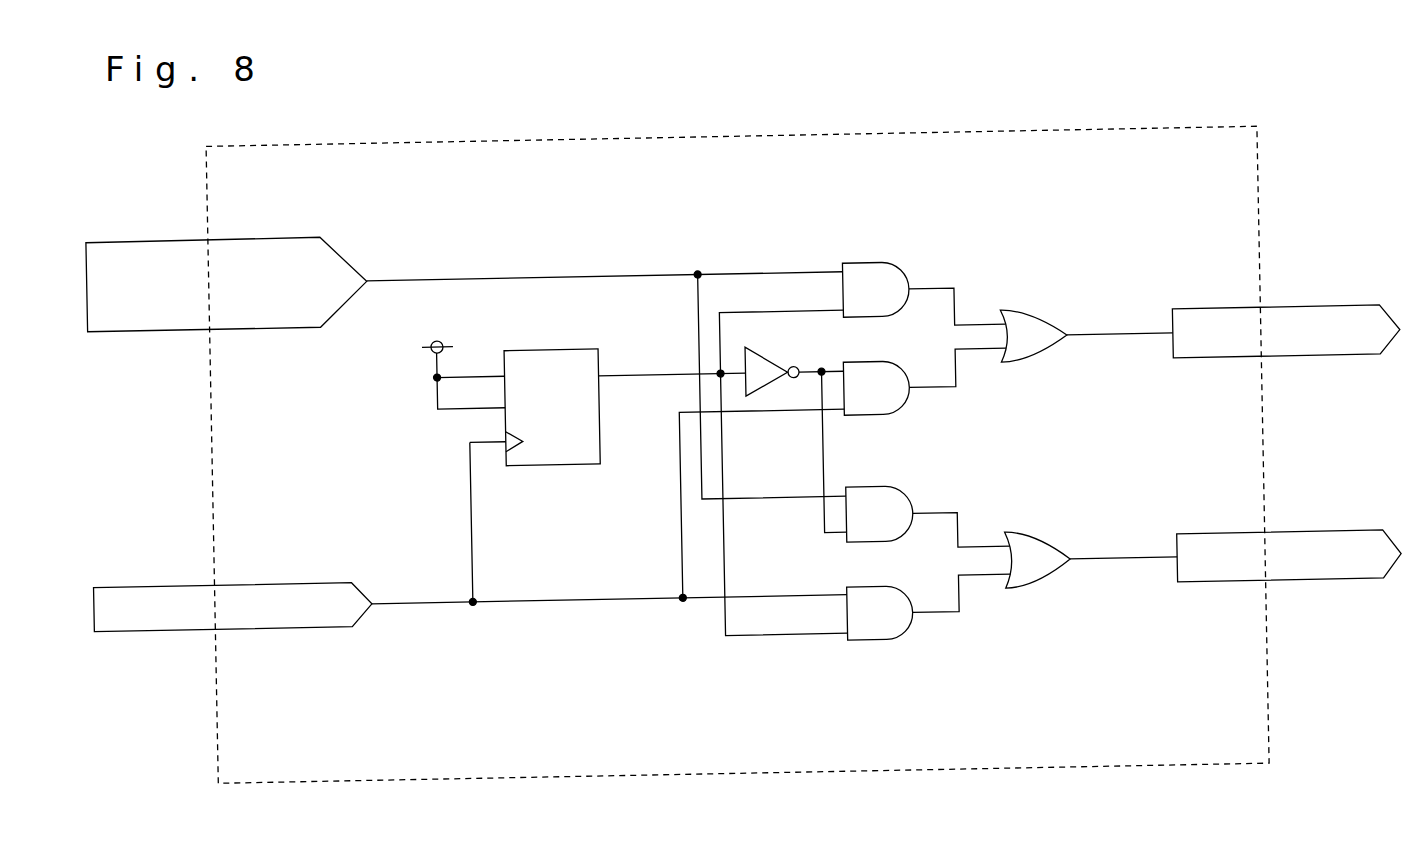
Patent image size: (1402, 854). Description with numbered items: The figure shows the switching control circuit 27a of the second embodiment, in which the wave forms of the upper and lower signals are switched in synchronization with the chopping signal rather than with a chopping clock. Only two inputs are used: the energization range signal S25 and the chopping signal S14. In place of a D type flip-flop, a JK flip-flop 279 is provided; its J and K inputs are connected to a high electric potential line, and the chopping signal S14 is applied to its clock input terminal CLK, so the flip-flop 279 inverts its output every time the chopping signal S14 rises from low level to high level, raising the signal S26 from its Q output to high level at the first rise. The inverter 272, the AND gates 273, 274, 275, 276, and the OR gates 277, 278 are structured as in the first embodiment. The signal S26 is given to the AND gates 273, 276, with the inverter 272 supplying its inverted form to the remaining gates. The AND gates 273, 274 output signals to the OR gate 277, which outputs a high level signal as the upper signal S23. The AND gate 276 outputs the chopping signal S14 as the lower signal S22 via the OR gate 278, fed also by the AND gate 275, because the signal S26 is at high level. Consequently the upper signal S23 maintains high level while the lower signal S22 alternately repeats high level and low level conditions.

The switching control circuit 27a is at (1120, 207).
The inverter 272 is at (785, 360).
The AND gate 273 is at (876, 268).
The AND gate 274 is at (878, 420).
The AND gate 275 is at (875, 492).
The AND gate 276 is at (876, 645).
The OR gate 277 is at (1020, 315).
The OR gate 278 is at (1019, 539).
The JK flip-flop 279 is at (547, 347).
The energization range signal S25 is at (465, 279).
The chopping signal S14 is at (470, 597).
The signal from output Q S26 is at (672, 358).
The upper signal S23 is at (1233, 329).
The lower signal S22 is at (1236, 552).